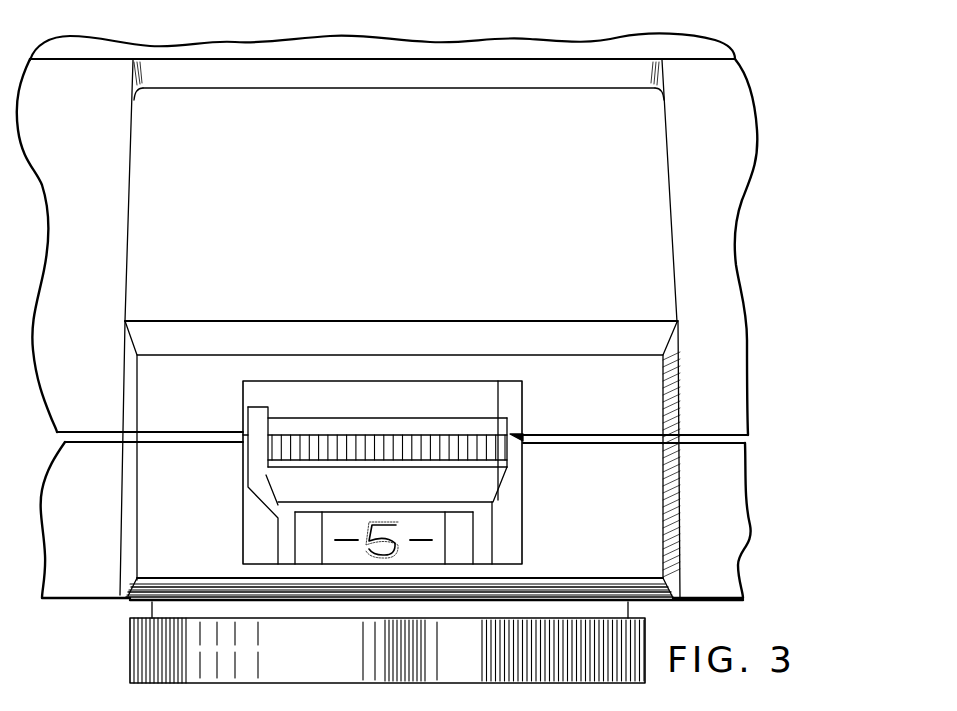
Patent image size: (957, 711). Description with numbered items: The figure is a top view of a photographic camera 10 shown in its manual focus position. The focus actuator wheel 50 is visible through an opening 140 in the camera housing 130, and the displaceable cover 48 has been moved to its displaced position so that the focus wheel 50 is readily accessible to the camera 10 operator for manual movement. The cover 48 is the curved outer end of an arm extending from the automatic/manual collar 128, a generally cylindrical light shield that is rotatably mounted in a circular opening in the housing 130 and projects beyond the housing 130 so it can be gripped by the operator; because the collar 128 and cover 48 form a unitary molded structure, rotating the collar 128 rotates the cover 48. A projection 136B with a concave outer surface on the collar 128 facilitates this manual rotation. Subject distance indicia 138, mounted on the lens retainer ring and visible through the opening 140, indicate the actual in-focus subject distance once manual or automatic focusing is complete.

The photographic camera 10 is at (765, 61).
The camera housing 130 is at (727, 283).
The opening 140 is at (243, 533).
The focus wheel 50 is at (498, 433).
The cover 48 is at (258, 428).
The subject distance indicia 138 is at (397, 534).
The A/M collar 128 is at (153, 648).
The projection 136B is at (463, 668).